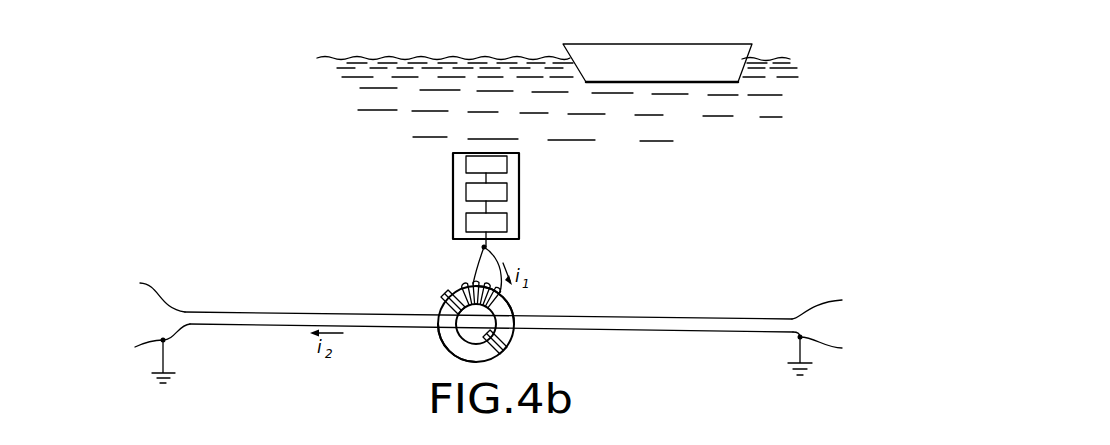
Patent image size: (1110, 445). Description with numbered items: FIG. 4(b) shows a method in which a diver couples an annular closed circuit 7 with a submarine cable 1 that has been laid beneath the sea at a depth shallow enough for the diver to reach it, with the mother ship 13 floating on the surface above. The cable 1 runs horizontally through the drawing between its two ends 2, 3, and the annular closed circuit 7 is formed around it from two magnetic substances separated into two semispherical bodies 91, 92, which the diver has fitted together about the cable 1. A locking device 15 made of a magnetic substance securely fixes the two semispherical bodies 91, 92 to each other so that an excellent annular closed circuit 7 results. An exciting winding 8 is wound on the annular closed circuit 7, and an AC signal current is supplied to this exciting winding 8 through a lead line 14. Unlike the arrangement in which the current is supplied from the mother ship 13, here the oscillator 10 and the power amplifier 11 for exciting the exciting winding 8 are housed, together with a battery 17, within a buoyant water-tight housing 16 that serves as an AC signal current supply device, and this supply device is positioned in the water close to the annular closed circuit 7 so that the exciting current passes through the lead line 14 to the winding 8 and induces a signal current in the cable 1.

The submarine cable 1 is at (685, 319).
The first cable end 2 is at (162, 276).
The second cable end 3 is at (842, 289).
The annular closed circuit 7 is at (509, 376).
The exciting winding 8 is at (473, 283).
The semispherical body 91 is at (508, 301).
The semispherical body 92 is at (442, 343).
The oscillator 10 is at (508, 192).
The power amplifier 11 is at (508, 222).
The mother ship 13 is at (662, 44).
The lead line 14 is at (486, 248).
The locking device 15 is at (448, 296).
The buoyant water-tight housing 16 is at (453, 160).
The battery 17 is at (508, 163).